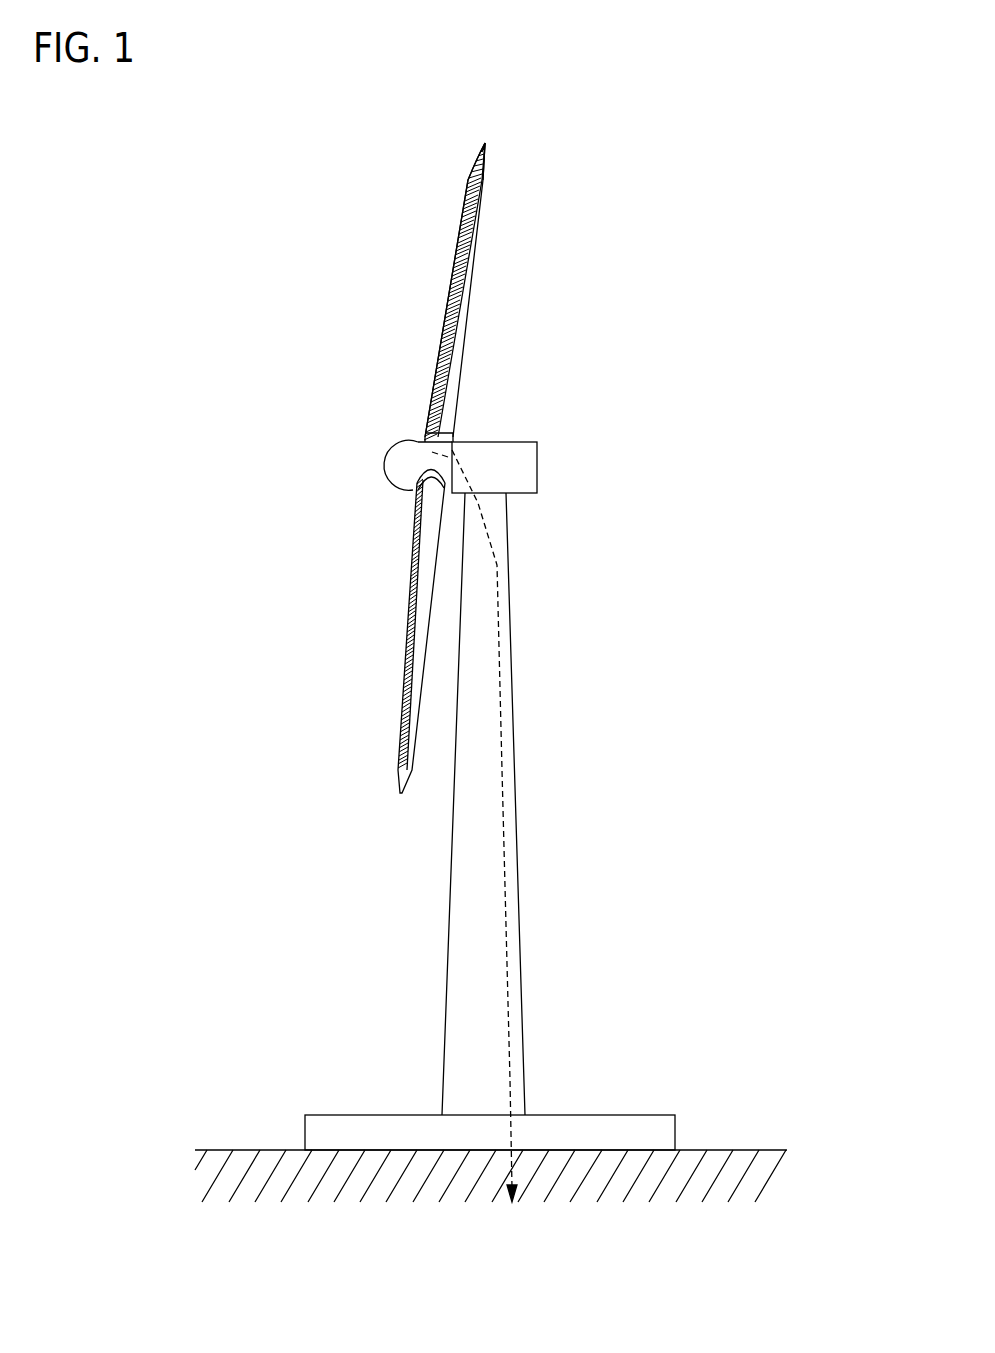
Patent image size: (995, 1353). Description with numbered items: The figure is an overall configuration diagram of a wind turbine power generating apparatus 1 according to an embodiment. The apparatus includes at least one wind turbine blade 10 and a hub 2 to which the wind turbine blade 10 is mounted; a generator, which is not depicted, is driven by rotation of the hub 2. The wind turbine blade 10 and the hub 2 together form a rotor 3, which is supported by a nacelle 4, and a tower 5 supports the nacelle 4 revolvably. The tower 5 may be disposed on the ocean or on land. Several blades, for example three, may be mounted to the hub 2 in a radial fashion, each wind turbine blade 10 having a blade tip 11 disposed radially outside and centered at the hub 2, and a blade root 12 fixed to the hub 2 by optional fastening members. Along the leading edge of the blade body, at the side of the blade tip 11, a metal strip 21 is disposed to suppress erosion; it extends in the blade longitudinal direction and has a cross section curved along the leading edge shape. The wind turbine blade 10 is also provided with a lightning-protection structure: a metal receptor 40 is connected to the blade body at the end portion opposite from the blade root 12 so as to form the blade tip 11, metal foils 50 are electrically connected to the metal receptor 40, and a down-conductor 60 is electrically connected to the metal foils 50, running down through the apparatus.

The wind turbine power generating apparatus 1 is at (679, 258).
The hub 2 is at (400, 468).
The rotor 3 is at (366, 439).
The nacelle 4 is at (513, 442).
The tower 5 is at (450, 931).
The wind turbine blade 10 is at (475, 282).
The blade tip 11 is at (486, 143).
The blade root 12 is at (421, 431).
The metal strip 21 is at (484, 203).
The metal receptor 40 is at (489, 158).
The metal foils 50 is at (449, 292).
The down-conductor 60 is at (511, 815).